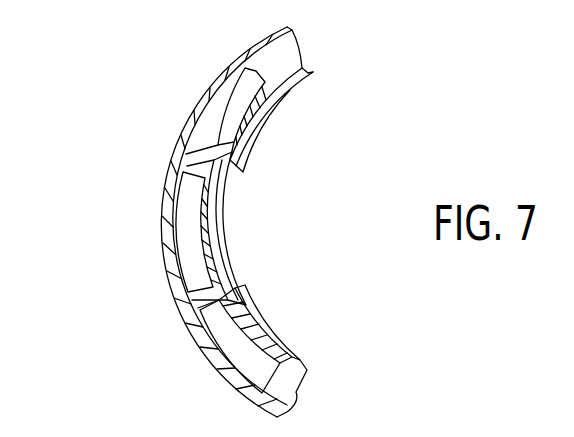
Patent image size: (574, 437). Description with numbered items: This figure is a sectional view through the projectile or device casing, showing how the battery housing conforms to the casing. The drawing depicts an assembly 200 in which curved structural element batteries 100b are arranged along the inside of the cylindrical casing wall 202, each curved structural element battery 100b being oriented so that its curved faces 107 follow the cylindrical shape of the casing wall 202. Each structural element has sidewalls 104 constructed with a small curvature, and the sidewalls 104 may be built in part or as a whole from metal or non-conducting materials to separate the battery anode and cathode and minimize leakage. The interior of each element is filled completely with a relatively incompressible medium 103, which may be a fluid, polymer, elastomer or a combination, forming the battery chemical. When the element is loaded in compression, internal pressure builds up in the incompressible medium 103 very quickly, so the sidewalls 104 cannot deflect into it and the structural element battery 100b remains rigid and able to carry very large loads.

The curved segment assembly 200 is at (85, 196).
The casing wall 202 is at (215, 369).
The curved structural element battery 100b is at (207, 102).
The sidewalls 104 is at (192, 170).
The curved faces 107 is at (241, 122).
The incompressible medium 103 is at (300, 207).